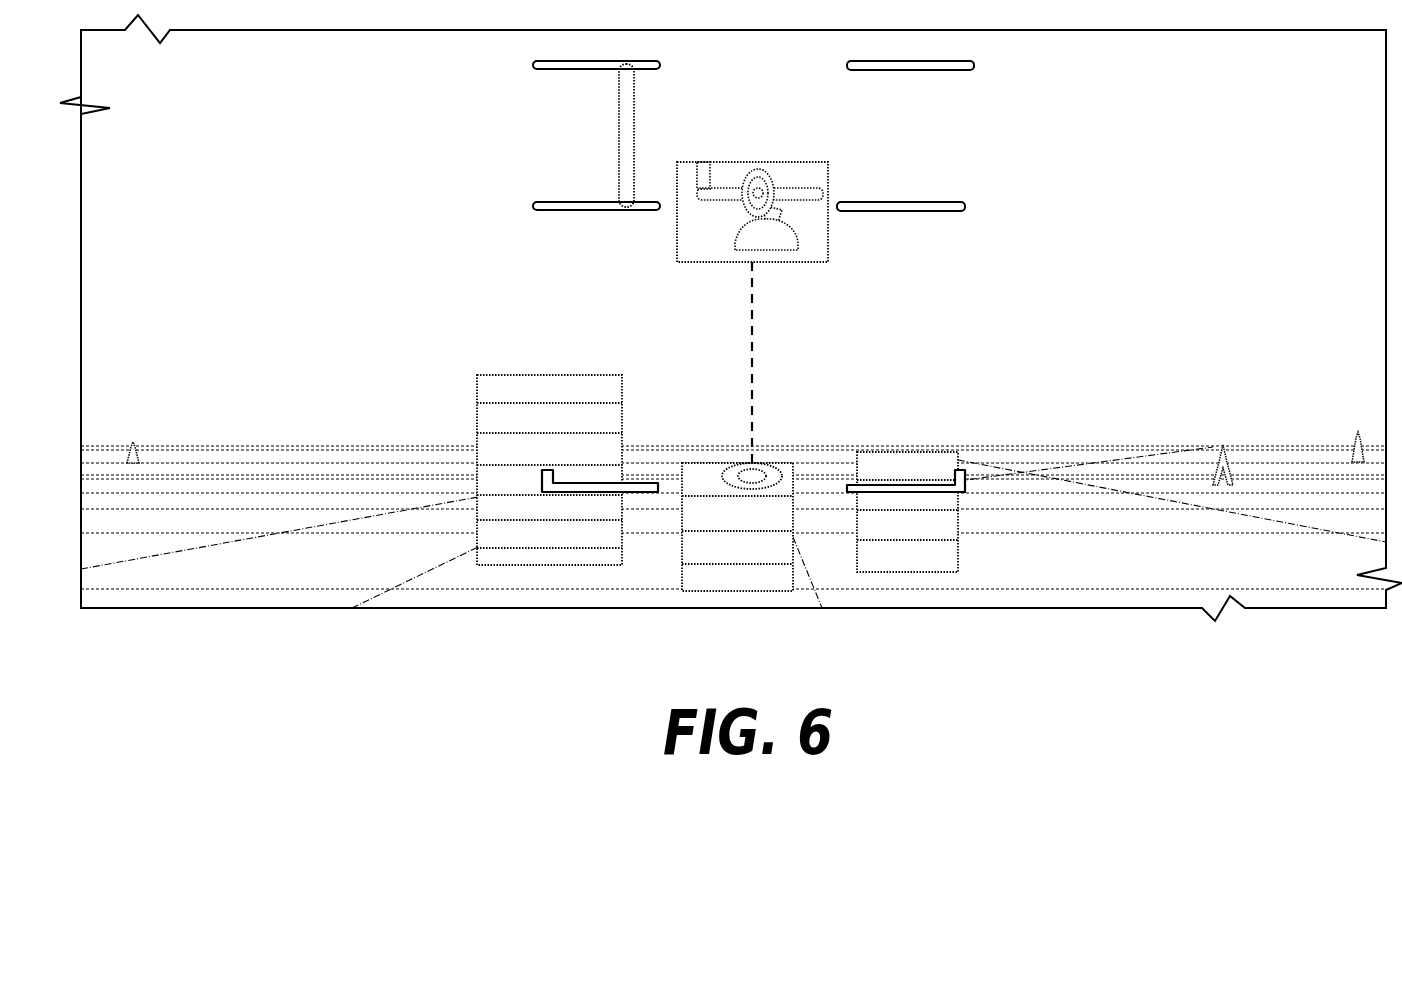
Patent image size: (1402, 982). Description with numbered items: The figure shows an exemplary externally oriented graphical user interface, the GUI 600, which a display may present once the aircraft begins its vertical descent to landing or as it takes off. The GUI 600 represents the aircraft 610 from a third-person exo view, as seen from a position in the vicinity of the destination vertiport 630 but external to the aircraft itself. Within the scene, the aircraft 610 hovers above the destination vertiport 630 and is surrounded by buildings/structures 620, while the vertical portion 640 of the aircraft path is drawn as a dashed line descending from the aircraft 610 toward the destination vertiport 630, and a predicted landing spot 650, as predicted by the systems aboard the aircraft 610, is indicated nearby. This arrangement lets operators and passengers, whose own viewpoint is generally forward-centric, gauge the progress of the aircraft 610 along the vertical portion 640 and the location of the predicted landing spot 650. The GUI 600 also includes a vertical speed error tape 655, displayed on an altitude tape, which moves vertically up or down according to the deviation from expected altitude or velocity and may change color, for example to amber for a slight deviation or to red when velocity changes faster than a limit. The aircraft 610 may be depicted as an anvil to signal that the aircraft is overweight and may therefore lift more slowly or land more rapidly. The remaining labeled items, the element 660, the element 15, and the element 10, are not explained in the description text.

The GUI 600 is at (731, 318).
The aircraft 610 is at (870, 273).
The buildings/structures 620 is at (474, 428).
The destination vertiport 630 is at (678, 556).
The vertical portion of the aircraft path 640 is at (748, 347).
The predicted landing spot 650 is at (908, 450).
The vertical speed error tape 655 is at (615, 137).
The horizontal member 660 is at (530, 64).
The upper rail 15 is at (760, 53).
The lower rail 10 is at (749, 194).